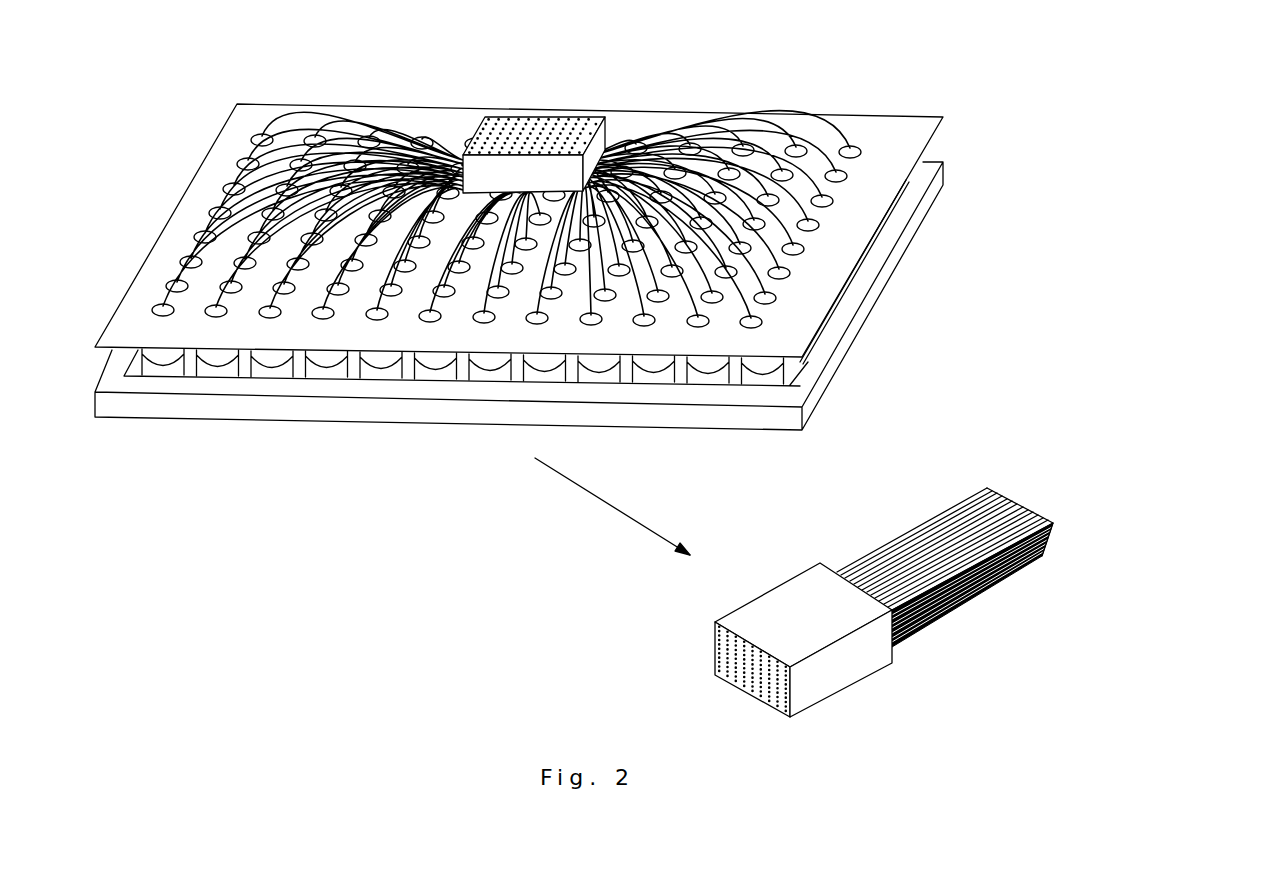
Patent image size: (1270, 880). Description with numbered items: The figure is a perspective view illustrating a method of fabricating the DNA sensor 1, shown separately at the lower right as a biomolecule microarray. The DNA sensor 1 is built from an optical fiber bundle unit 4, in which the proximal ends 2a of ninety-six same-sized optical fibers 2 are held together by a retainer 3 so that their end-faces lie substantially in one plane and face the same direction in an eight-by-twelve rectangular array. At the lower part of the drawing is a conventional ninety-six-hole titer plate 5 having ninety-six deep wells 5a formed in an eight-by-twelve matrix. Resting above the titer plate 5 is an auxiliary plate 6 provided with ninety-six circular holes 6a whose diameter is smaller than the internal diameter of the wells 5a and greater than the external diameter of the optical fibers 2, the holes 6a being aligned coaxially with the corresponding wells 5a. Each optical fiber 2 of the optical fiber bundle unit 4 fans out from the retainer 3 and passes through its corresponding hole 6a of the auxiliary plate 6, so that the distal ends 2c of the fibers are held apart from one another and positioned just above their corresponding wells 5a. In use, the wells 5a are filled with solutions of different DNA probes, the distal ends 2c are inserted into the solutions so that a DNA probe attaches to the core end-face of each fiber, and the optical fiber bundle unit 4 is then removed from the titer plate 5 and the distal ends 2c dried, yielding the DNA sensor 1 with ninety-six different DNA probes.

The DNA sensor 1 is at (930, 380).
The optical fibers 2 is at (342, 118).
The proximal ends 2a is at (712, 634).
The distal ends 2c is at (985, 488).
The retainer 3 is at (606, 130).
The optical fiber bundle unit 4 is at (535, 113).
The titer plate 5 is at (478, 405).
The wells 5a is at (150, 375).
The auxiliary plate 6 is at (190, 205).
The circular holes 6a is at (262, 134).